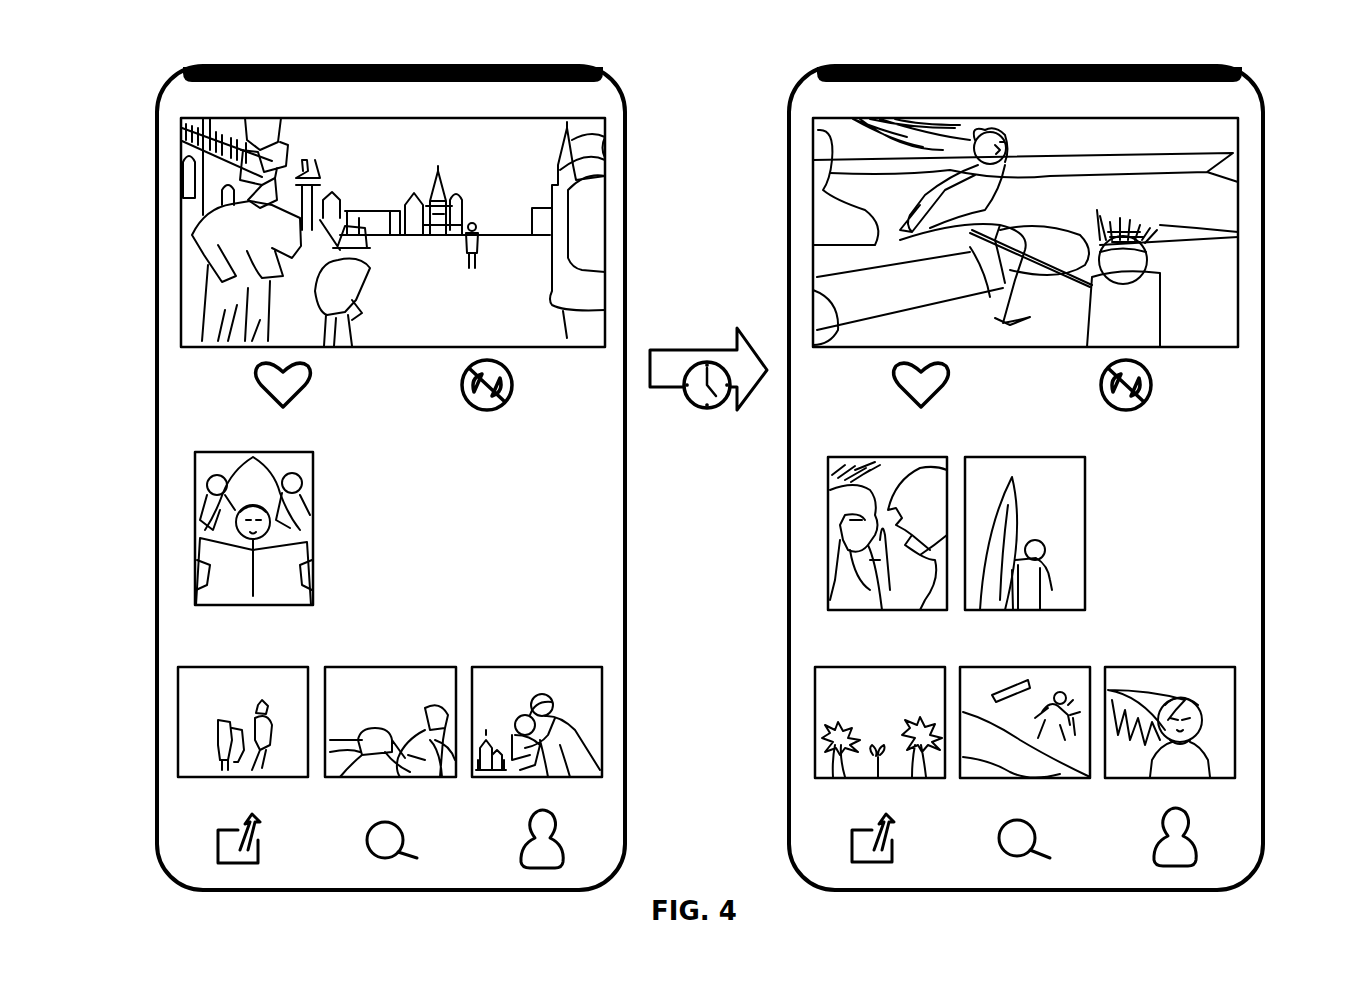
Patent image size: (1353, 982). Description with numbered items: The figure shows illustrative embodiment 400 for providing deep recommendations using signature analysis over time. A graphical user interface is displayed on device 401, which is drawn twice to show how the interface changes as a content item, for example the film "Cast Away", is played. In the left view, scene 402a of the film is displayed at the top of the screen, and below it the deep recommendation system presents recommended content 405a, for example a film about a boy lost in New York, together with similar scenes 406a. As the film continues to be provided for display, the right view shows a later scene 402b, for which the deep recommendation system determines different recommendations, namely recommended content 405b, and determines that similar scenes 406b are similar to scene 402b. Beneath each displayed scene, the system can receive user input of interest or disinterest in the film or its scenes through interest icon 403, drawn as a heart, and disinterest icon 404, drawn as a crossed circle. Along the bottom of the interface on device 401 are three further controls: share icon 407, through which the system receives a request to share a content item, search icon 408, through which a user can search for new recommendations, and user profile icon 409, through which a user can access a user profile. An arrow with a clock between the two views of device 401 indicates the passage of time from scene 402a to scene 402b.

The illustrative embodiment 400 is at (702, 29).
The device 401 is at (248, 64).
The scene 402a is at (606, 162).
The scene 402b is at (1242, 162).
The interest icon 403 is at (313, 373).
The disinterest icon 404 is at (515, 373).
The recommended content 405a is at (186, 610).
The recommended content 405b is at (816, 613).
The similar scenes 406a is at (178, 793).
The similar scenes 406b is at (816, 793).
The share icon 407 is at (262, 828).
The search icon 408 is at (404, 828).
The user profile icon 409 is at (563, 860).